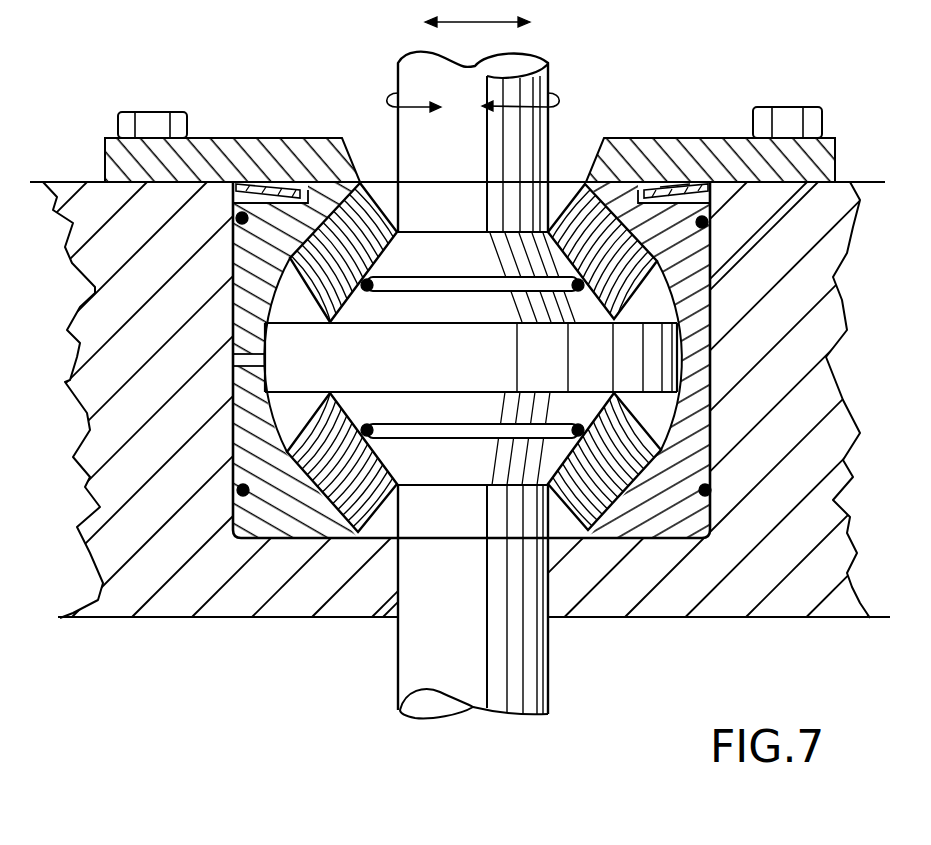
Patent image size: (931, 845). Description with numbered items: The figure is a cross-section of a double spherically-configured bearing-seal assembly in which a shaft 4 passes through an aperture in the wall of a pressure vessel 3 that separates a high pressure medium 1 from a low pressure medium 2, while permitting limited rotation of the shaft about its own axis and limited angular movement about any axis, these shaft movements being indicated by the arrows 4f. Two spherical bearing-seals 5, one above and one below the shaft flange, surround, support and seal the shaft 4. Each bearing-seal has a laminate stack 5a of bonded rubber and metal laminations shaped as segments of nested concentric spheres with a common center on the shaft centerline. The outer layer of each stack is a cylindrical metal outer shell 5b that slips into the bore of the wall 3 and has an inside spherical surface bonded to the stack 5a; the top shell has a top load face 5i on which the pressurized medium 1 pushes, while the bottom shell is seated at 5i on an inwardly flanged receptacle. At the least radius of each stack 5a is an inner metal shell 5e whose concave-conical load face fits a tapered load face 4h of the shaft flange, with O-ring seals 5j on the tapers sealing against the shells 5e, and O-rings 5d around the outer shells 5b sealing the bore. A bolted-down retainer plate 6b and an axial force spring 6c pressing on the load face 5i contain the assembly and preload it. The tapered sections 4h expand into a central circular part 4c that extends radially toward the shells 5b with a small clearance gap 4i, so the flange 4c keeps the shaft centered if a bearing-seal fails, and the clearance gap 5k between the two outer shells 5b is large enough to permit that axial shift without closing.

The high pressure medium 1 is at (265, 67).
The low pressure medium 2 is at (243, 685).
The pressure vessel wall 3 is at (148, 573).
The shaft 4 is at (556, 657).
The central circular part of the shaft flange 4c is at (465, 375).
The shaft movement direction arrows 4f is at (473, 70).
The tapered load face 4h is at (467, 273).
The clearance gap 4i is at (687, 380).
The spherical bearing-seal 5 is at (561, 195).
The laminate stack 5a is at (268, 303).
The outer shell 5b is at (233, 264).
The O-ring seal 5d is at (237, 218).
The inner metal shell 5e is at (360, 296).
The load face 5i is at (585, 183).
The O-ring seal 5j is at (385, 283).
The clearance gap 5k is at (233, 360).
The retainer plate 6b is at (308, 137).
The axial force spring 6c is at (662, 188).